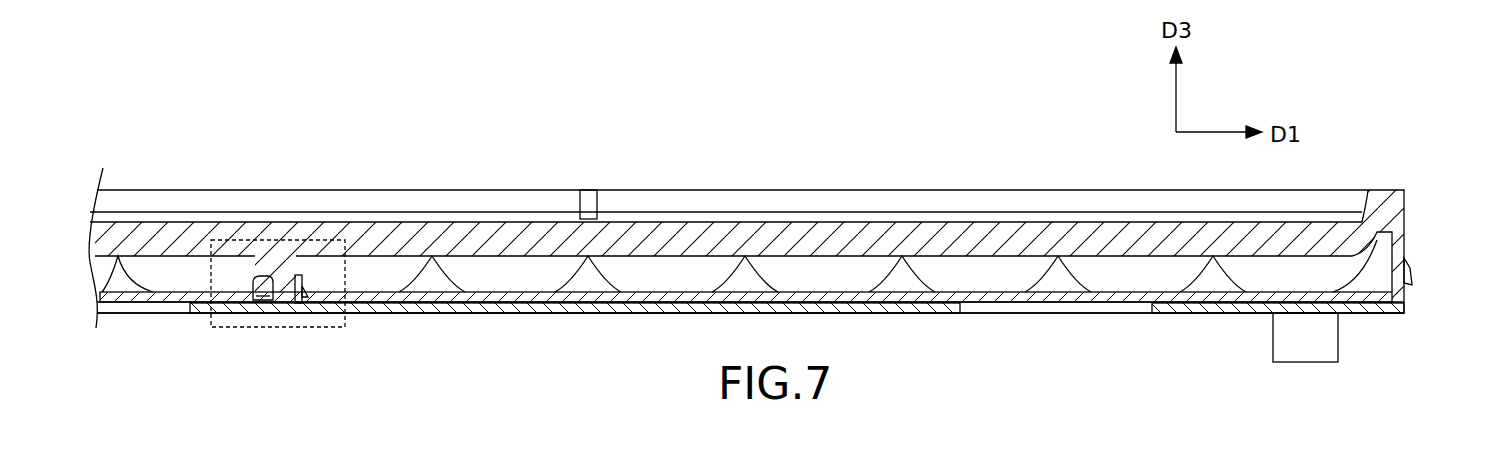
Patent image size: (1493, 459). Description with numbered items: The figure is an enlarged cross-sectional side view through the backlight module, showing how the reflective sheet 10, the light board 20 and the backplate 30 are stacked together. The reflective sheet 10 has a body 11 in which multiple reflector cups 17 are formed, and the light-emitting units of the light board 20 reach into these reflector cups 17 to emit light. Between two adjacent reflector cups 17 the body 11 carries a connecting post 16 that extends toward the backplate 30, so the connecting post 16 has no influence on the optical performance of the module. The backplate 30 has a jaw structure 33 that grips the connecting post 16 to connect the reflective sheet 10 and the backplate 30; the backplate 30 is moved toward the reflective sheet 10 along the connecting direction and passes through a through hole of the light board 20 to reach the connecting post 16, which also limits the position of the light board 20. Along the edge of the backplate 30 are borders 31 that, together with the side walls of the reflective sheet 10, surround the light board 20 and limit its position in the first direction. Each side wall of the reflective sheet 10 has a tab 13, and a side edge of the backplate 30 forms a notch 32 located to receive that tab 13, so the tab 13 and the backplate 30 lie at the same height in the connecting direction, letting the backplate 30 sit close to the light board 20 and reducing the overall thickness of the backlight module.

The reflective sheet 10 is at (779, 210).
The body 11 is at (645, 290).
The tab 13 is at (1007, 312).
The connecting post 16 is at (280, 265).
The reflector cup 17 is at (473, 268).
The light board 20 is at (437, 305).
The backplate 30 is at (538, 318).
The border 31 is at (1400, 290).
The notch 32 is at (1150, 316).
The jaw structure 33 is at (248, 326).